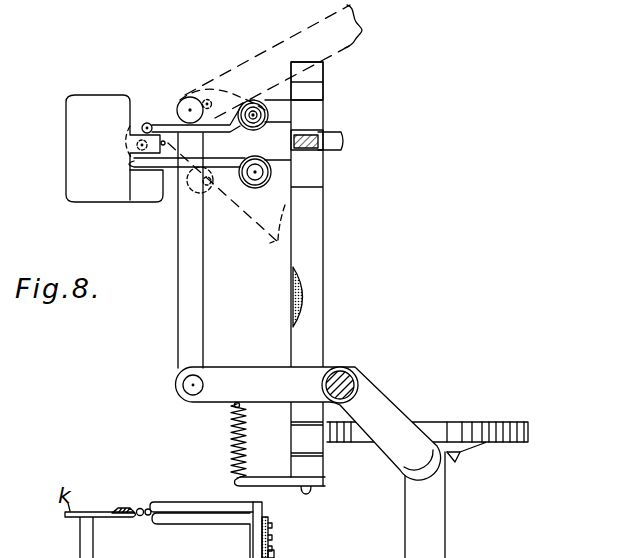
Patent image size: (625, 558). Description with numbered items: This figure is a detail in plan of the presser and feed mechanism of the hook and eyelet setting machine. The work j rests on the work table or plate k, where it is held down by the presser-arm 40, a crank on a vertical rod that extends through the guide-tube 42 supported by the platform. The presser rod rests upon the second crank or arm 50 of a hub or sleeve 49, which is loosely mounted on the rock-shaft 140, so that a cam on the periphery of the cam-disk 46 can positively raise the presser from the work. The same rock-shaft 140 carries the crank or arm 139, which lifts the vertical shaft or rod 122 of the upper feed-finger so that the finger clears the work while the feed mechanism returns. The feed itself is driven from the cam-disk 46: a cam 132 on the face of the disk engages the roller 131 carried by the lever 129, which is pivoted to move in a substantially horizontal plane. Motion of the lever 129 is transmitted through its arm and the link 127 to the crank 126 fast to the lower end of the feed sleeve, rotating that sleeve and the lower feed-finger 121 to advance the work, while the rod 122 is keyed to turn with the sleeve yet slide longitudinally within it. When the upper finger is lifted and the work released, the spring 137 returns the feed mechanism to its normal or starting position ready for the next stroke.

The presser-arm 40 is at (138, 167).
The guide-tube 42 is at (260, 188).
The cam-disk 46 is at (508, 422).
The hub or sleeve 49 is at (316, 247).
The second crank or arm 50 is at (282, 216).
The lower feed-finger 121 is at (180, 524).
The vertical shaft or rod 122 is at (262, 509).
The crank 126 is at (217, 106).
The link 127 is at (180, 300).
The lever 129 is at (412, 400).
The roller 131 is at (433, 481).
The cam 132 is at (446, 453).
The spring 137 is at (230, 442).
The crank or arm 139 is at (283, 118).
The rock-shaft 140 is at (294, 296).
The work table or plate k is at (115, 148).
The work j is at (120, 509).